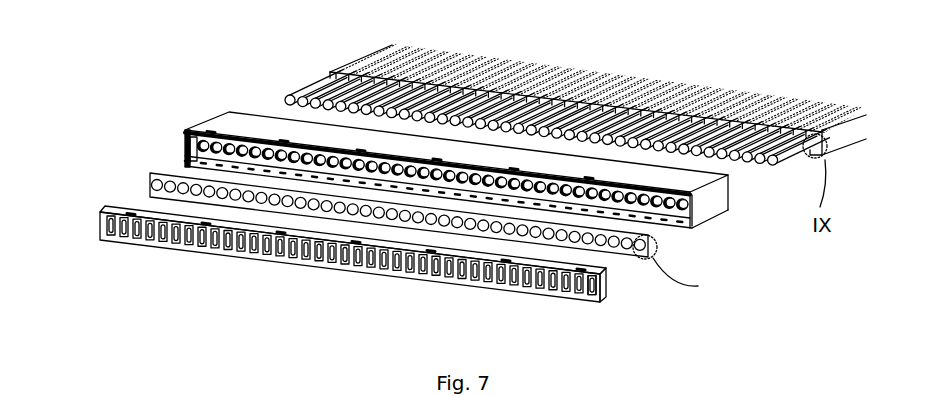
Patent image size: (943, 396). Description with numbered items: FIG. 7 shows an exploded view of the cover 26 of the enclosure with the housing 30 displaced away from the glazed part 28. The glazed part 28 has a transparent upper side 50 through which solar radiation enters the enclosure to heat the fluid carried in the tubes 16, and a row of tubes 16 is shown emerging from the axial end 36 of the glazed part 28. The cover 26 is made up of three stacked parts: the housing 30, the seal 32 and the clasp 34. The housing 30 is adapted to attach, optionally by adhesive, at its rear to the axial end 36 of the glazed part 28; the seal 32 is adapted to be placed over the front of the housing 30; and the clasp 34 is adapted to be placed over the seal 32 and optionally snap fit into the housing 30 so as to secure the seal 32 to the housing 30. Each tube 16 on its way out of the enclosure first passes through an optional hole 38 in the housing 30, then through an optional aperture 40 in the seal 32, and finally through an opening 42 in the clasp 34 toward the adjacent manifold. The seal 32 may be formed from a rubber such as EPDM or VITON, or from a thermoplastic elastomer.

The tube 16 is at (294, 96).
The cover 26 is at (427, 188).
The glazed part 28 is at (647, 96).
The housing 30 is at (246, 127).
The seal 32 is at (146, 179).
The clasp 34 is at (108, 199).
The axial end 36 is at (324, 63).
The hole 38 is at (694, 210).
The aperture 40 is at (640, 262).
The opening 42 is at (592, 296).
The transparent upper side 50 is at (777, 107).